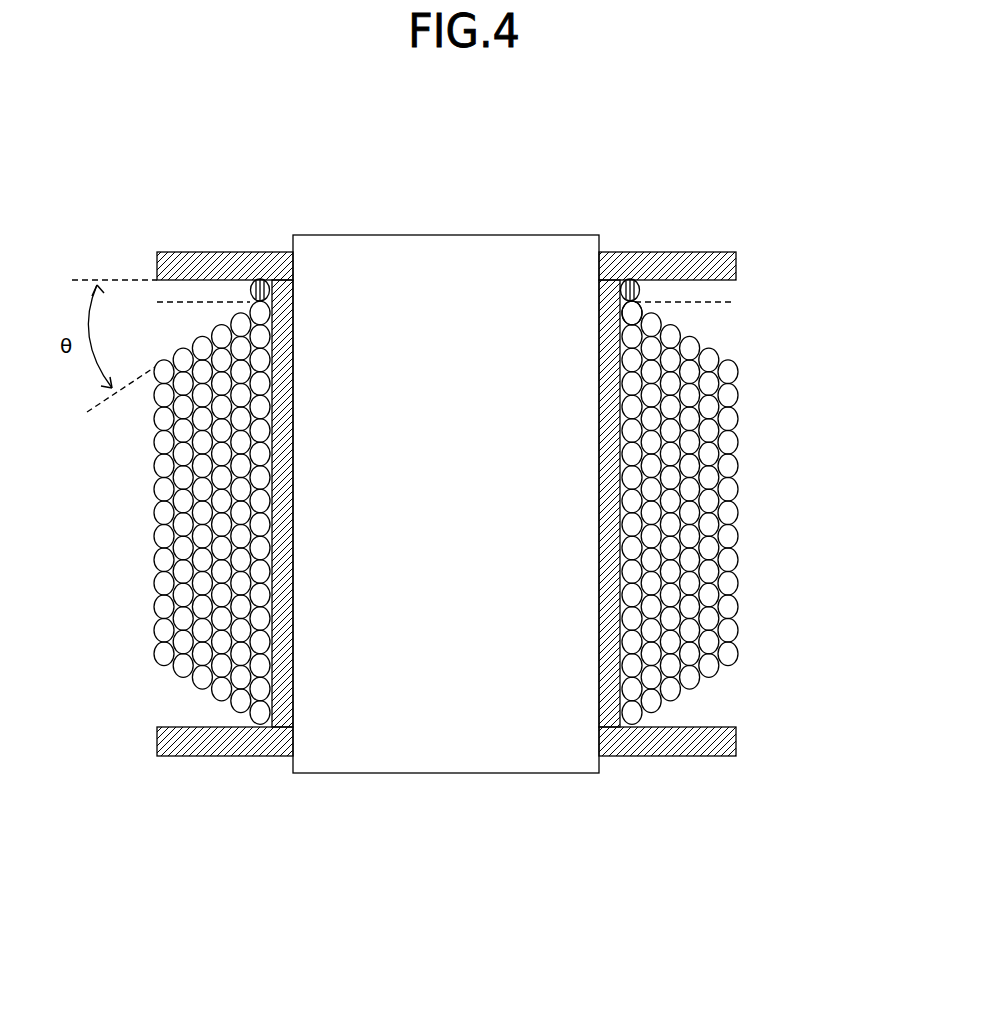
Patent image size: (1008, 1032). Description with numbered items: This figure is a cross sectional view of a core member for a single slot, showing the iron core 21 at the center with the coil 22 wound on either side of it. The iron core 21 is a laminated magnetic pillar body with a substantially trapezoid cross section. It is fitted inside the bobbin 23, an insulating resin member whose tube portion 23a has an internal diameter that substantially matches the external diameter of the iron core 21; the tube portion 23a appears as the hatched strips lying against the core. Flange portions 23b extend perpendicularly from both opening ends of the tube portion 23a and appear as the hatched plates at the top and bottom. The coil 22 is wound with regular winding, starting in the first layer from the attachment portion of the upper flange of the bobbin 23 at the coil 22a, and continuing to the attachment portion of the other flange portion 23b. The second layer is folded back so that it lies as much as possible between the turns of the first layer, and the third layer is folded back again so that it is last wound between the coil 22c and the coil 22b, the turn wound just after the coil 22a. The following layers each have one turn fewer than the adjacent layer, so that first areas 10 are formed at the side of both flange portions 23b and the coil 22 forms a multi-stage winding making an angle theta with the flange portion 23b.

The first area 10 is at (708, 310).
The iron core 21 is at (519, 243).
The coil 22 is at (735, 400).
The coil at the start of winding 22a is at (633, 280).
The coil wound in a subsequent turn 22b is at (624, 316).
The coil 22c is at (628, 338).
The bobbin 23 is at (255, 252).
The tube portion 23a is at (285, 623).
The flange portion 23b is at (208, 745).